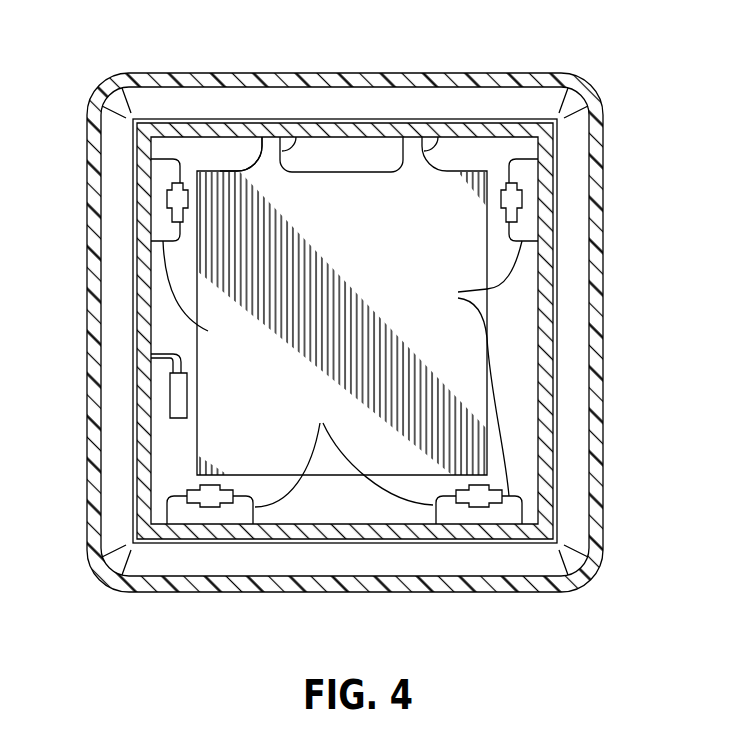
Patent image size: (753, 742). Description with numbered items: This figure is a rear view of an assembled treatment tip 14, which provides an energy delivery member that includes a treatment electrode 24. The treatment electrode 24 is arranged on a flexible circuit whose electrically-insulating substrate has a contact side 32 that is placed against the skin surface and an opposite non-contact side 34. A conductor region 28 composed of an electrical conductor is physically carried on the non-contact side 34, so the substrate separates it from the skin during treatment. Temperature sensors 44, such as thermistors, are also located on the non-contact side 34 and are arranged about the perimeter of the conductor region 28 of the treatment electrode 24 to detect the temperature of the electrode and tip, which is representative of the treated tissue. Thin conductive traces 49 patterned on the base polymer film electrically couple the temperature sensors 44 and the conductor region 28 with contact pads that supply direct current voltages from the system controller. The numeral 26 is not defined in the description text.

The treatment tip 14 is at (608, 312).
The treatment electrode 24 is at (296, 137).
The panel 26 is at (338, 460).
The conductor region 28 is at (525, 407).
The contact side 32 is at (229, 158).
The non-contact side 34 is at (359, 158).
The temperature sensors 44 is at (186, 197).
The conductive traces 49 is at (342, 374).